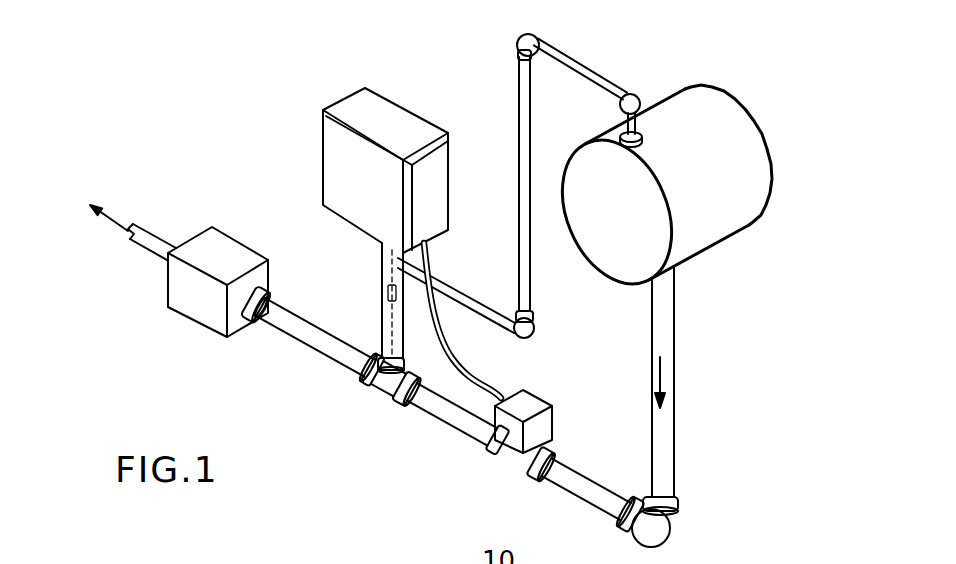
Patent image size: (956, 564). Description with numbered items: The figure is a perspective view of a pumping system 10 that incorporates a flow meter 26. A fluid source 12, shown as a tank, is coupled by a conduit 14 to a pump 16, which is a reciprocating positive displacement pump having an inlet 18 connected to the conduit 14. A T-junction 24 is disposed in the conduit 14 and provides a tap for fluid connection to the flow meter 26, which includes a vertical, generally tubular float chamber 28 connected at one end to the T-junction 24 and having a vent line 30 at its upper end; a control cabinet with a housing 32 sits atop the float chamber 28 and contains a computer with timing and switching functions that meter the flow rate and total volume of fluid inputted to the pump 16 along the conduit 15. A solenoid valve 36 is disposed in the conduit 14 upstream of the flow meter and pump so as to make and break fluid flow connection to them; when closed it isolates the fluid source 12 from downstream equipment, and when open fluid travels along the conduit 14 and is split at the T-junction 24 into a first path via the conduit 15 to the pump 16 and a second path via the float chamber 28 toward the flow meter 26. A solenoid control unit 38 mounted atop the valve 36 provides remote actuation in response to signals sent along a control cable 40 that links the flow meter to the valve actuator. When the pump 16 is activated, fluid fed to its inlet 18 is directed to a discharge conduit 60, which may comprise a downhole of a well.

The pumping system 10 is at (204, 161).
The fluid source 12 is at (712, 110).
The conduit 14 is at (660, 338).
The conduit 15 is at (305, 333).
The pump 16 is at (233, 253).
The inlet 18 is at (263, 283).
The T-junction 24 is at (387, 383).
The flow meter 26 is at (425, 111).
The float chamber 28 is at (368, 298).
The vent line 30 is at (475, 298).
The control unit housing 32 is at (340, 150).
The solenoid valve 36 is at (556, 375).
The solenoid control unit 38 is at (545, 423).
The control cable 40 is at (465, 367).
The discharge conduit 60 is at (145, 247).